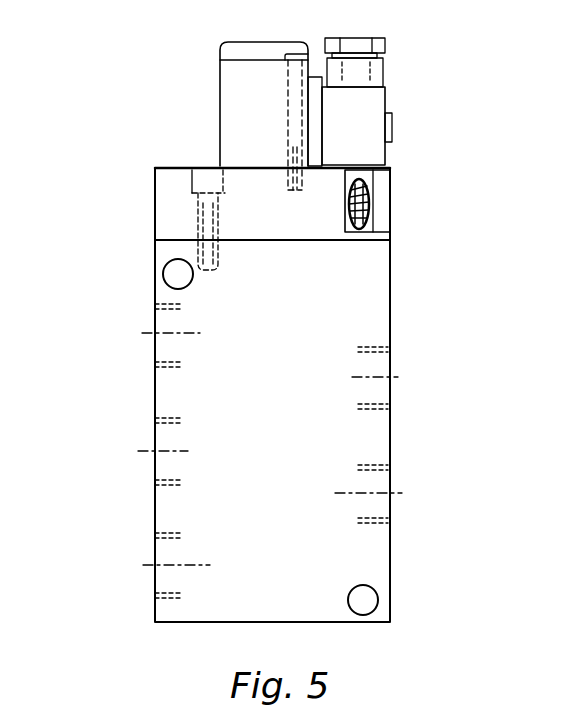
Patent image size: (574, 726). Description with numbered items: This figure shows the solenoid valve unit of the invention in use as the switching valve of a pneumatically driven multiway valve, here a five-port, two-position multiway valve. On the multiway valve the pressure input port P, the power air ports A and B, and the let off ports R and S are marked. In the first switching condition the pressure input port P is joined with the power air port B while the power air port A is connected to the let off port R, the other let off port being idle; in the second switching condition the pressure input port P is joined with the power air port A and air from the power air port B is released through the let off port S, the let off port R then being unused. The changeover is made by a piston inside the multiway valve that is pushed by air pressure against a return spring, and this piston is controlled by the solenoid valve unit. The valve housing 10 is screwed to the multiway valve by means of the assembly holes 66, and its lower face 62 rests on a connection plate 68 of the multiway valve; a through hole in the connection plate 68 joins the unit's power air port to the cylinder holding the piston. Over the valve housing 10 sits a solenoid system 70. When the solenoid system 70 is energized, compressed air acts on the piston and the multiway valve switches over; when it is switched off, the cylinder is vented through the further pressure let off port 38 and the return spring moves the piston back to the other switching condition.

The valve housing 10 is at (261, 335).
The further pressure let off port 38 is at (372, 202).
The lower face 62 is at (180, 230).
The assembly holes 66 is at (192, 186).
The connection plate 68 is at (336, 248).
The solenoid system 70 is at (230, 84).
The let off port R is at (156, 333).
The pressure input port P is at (152, 453).
The let off port S is at (163, 566).
The power air port A is at (388, 380).
The power air port B is at (381, 496).